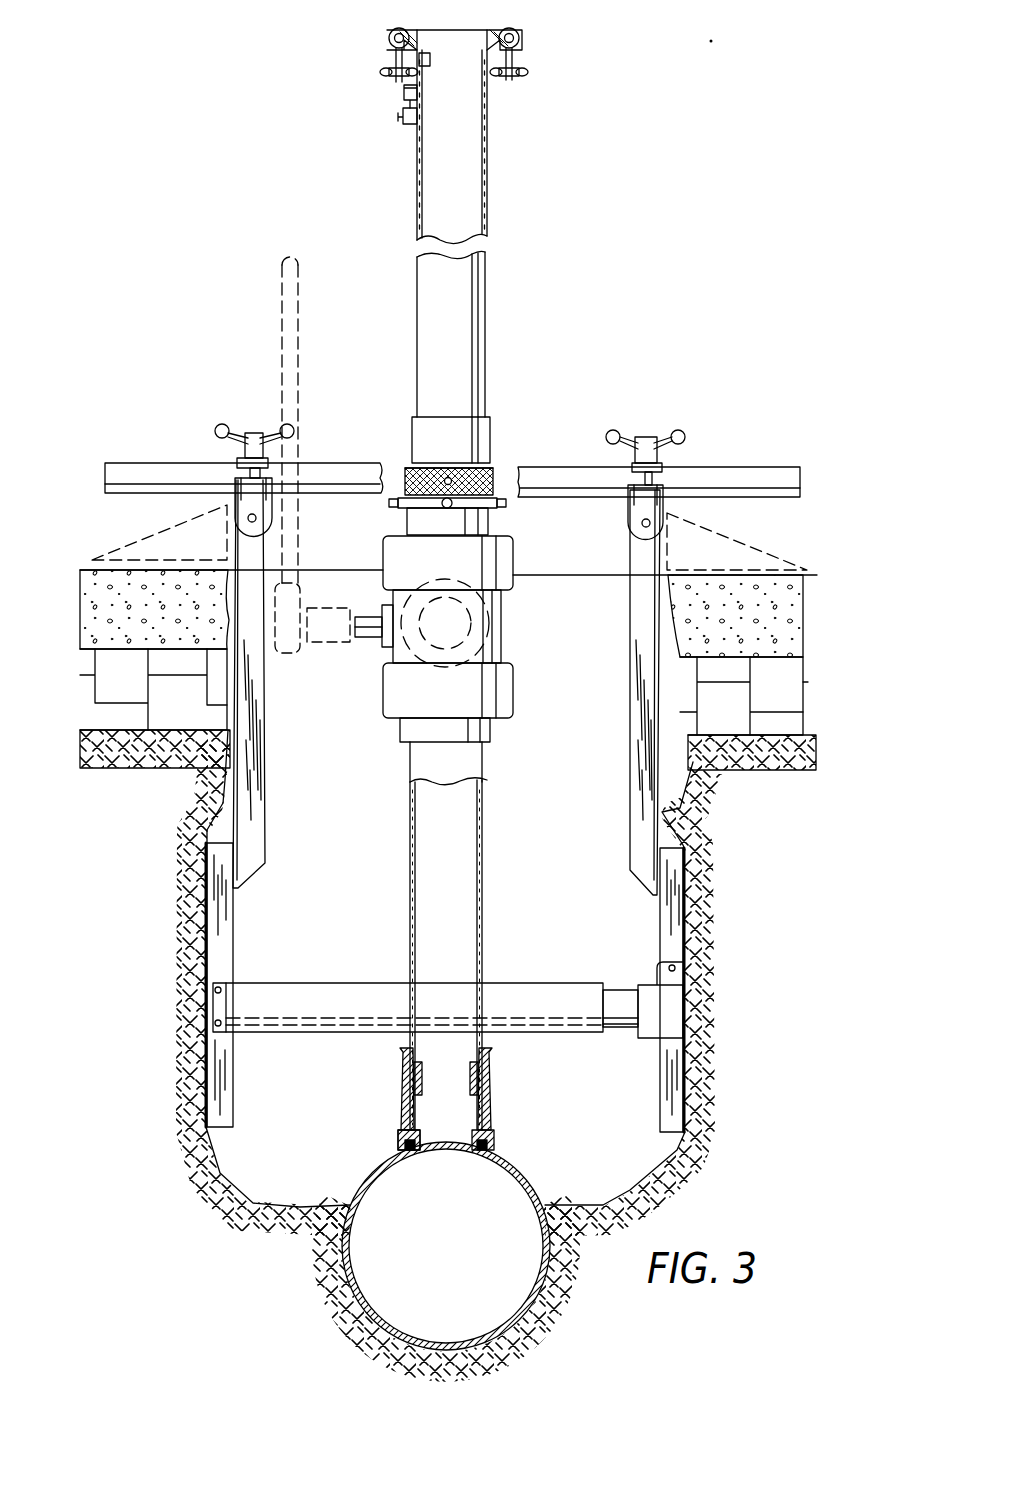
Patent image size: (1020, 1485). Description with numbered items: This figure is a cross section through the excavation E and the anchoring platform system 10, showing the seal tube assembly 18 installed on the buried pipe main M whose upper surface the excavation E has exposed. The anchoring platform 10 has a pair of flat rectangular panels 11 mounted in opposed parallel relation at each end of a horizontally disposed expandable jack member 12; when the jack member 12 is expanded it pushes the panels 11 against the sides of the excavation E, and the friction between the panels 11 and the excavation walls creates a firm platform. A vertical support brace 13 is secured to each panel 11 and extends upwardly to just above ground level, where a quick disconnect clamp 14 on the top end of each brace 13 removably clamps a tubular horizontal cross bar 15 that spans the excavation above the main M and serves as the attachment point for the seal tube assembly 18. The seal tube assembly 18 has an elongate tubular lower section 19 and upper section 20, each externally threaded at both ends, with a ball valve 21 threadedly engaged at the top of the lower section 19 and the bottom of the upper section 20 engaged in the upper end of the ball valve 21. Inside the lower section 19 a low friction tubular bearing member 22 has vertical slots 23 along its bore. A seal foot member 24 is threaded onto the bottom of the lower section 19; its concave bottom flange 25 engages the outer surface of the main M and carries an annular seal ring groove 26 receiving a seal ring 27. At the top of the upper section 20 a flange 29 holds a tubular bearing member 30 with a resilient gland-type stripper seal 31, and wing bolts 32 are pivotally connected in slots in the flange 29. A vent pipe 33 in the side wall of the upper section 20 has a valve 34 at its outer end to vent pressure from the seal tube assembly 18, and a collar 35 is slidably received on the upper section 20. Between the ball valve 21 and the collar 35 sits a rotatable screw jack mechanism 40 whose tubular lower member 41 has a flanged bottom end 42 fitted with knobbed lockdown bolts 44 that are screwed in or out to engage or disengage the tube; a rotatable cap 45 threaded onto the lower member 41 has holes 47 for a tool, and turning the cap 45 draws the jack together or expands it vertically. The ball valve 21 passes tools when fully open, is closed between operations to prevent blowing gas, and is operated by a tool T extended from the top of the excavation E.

The anchoring platform system 10 is at (452, 458).
The flat rectangular panels 11 is at (234, 923).
The expandable jack member 12 is at (333, 983).
The vertical support brace 13 is at (266, 722).
The quick disconnect clamp 14 is at (255, 435).
The tubular horizontal cross bar 15 is at (578, 466).
The seal tube assembly 18 is at (510, 318).
The tubular lower section 19 is at (483, 855).
The tubular upper section 20 is at (445, 123).
The ball valve 21 is at (472, 625).
The tubular bearing member 22 is at (492, 1099).
The vertical slots 23 is at (488, 1085).
The seal foot member 24 is at (402, 1085).
The concave bottom flange 25 is at (400, 1142).
The annular seal ring groove 26 is at (447, 1176).
The seal ring 27 is at (442, 1150).
The flange 29 is at (515, 48).
The tubular bearing member 30 is at (443, 20).
The stripper seal 31 is at (427, 62).
The wing bolts 32 is at (392, 58).
The vent pipe 33 is at (403, 92).
The valve 34 is at (405, 122).
The collar 35 is at (460, 418).
The rotatable screw jack mechanism 40 is at (432, 478).
The tubular lower member 41 is at (486, 613).
The flanged bottom end 42 is at (492, 508).
The lockdown bolts 44 is at (392, 506).
The rotatable cap 45 is at (492, 470).
The holes 47 is at (448, 480).
The tool T is at (286, 307).
The pipe main M is at (519, 1168).
The excavation E is at (222, 1172).